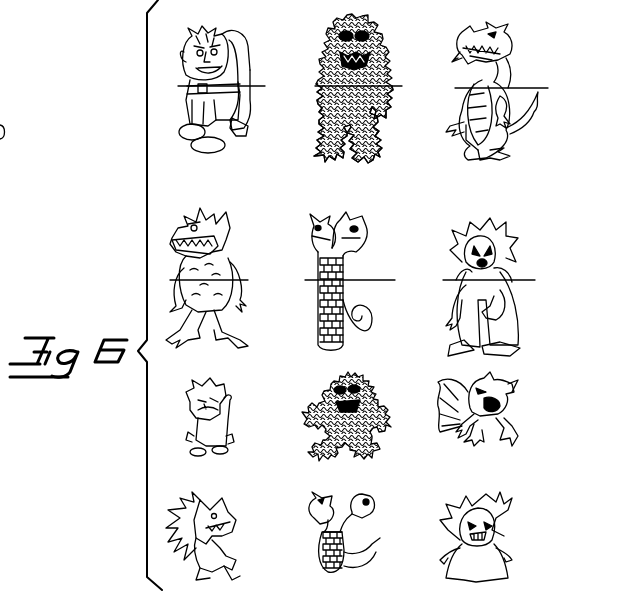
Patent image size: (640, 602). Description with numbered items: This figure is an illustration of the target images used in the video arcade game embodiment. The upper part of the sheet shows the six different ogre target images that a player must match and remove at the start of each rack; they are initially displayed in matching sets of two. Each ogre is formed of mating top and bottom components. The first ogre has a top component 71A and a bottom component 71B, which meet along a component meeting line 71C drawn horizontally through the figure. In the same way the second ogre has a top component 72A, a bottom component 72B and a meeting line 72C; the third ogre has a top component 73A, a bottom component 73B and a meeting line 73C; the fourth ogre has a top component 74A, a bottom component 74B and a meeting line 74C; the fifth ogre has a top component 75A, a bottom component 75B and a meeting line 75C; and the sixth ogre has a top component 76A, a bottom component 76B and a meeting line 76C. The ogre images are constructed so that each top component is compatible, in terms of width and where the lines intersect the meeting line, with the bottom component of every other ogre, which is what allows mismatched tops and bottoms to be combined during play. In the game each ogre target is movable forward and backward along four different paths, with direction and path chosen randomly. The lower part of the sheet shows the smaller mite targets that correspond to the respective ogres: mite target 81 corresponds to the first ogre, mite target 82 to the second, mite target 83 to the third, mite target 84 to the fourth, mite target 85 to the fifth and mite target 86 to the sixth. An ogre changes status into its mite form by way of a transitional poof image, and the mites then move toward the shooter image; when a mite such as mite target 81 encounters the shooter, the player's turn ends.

The top component 71A is at (240, 40).
The bottom component 71B is at (243, 117).
The component meeting line 71C is at (258, 86).
The top component 72A is at (378, 32).
The bottom component 72B is at (384, 117).
The component meeting line 72C is at (397, 86).
The top component 73A is at (517, 31).
The bottom component 73B is at (523, 126).
The component meeting line 73C is at (541, 88).
The top component 74A is at (238, 247).
The bottom component 74B is at (238, 309).
The component meeting line 74C is at (246, 280).
The top component 75A is at (371, 241).
The bottom component 75B is at (372, 321).
The component meeting line 75C is at (386, 280).
The top component 76A is at (519, 233).
The bottom component 76B is at (504, 335).
The component meeting line 76C is at (536, 280).
The mite target 81 is at (236, 414).
The mite target 82 is at (364, 397).
The mite target 83 is at (511, 391).
The mite target 84 is at (222, 508).
The mite target 85 is at (366, 531).
The mite target 86 is at (505, 540).